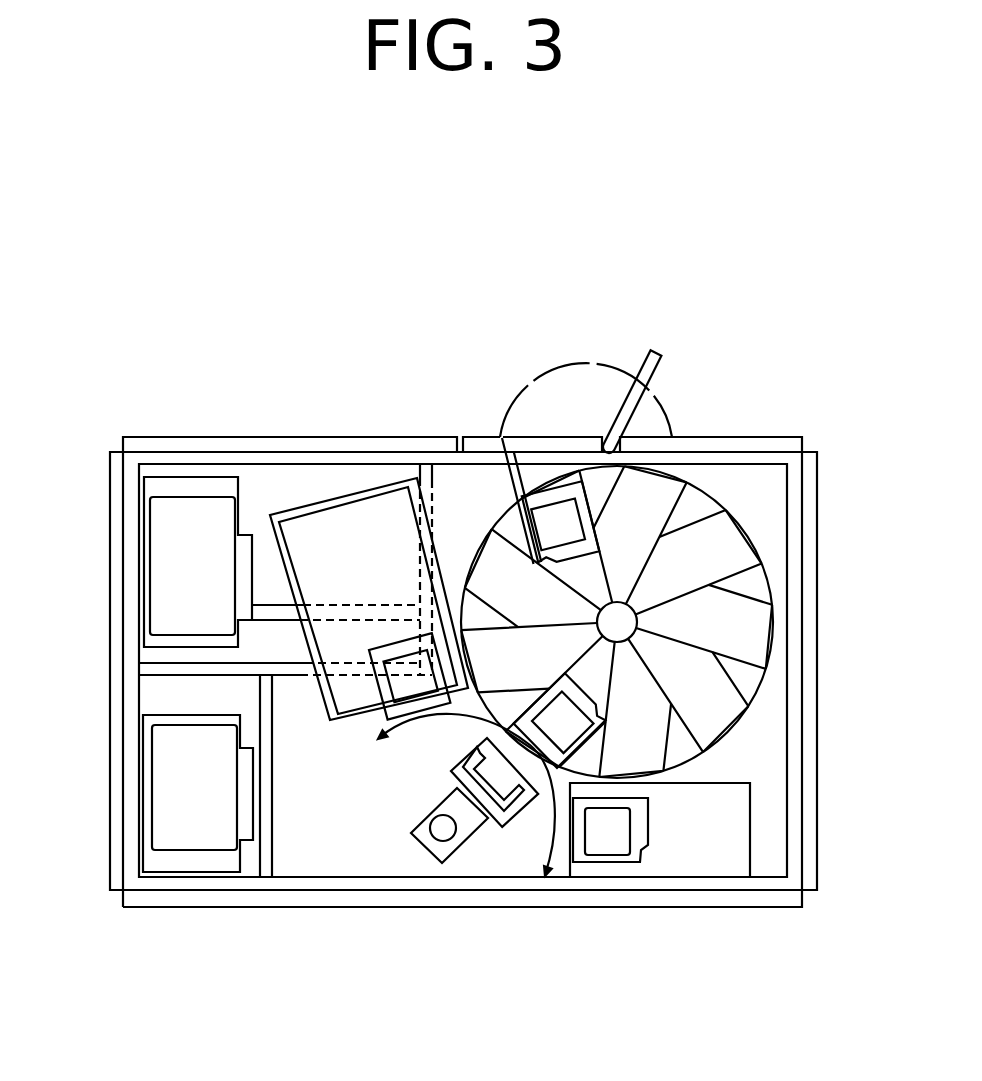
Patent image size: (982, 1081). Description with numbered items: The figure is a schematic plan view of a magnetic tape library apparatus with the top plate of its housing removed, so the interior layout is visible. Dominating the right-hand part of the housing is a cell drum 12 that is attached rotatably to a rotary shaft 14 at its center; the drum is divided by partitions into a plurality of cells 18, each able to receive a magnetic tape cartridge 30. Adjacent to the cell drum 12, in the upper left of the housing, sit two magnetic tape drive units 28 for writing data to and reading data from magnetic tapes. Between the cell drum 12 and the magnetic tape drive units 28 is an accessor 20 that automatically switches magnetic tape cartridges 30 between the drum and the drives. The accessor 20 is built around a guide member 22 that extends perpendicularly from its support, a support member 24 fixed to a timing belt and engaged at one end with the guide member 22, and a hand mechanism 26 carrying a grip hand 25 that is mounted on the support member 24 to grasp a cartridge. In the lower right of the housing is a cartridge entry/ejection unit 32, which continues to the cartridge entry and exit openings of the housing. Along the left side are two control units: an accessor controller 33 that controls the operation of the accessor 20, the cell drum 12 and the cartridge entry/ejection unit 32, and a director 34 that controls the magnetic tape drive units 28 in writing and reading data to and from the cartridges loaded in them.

The cell drum 12 is at (717, 487).
The rotary shaft 14 is at (620, 622).
The cells 18 is at (595, 577).
The accessor 20 is at (461, 865).
The guide member 22 is at (443, 833).
The support member 24 is at (470, 827).
The grip hand 25 is at (467, 758).
The hand mechanism 26 is at (505, 815).
The magnetic tape drive unit 28 is at (318, 517).
The magnetic tape cartridge 30 is at (558, 508).
The cartridge entry/ejection unit 32 is at (700, 860).
The accessor controller 33 is at (176, 801).
The director 34 is at (176, 578).